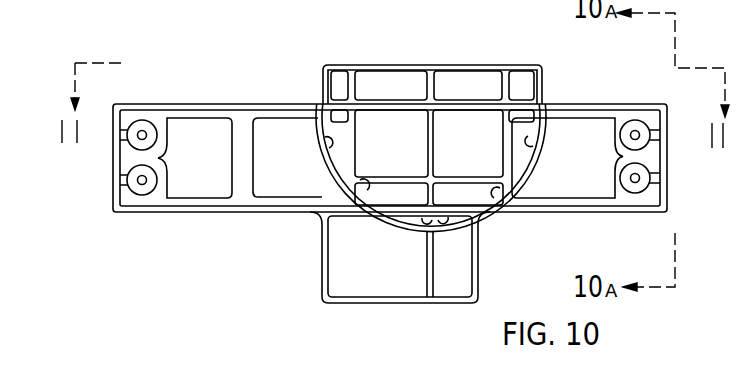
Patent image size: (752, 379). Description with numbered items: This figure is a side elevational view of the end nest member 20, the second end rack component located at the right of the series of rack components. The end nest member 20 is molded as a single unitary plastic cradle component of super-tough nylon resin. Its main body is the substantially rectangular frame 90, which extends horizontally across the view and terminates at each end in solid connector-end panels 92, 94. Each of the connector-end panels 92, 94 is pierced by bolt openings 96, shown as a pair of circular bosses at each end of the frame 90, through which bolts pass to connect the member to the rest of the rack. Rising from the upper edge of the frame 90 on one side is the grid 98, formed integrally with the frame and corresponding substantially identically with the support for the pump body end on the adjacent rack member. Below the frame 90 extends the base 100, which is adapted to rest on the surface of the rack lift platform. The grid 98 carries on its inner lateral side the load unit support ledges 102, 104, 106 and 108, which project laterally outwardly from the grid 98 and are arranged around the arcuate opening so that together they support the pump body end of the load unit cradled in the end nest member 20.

The end nest member 20 is at (243, 105).
The rectangular frame 90 is at (562, 104).
The connector-end panel 92 is at (128, 157).
The connector-end panel 94 is at (652, 157).
The bolt openings 96 is at (141, 131).
The grid 98 is at (472, 65).
The base 100 is at (407, 306).
The load unit support ledge 102 is at (532, 153).
The load unit support ledge 104 is at (498, 204).
The load unit support ledge 106 is at (377, 213).
The load unit support ledge 108 is at (328, 150).